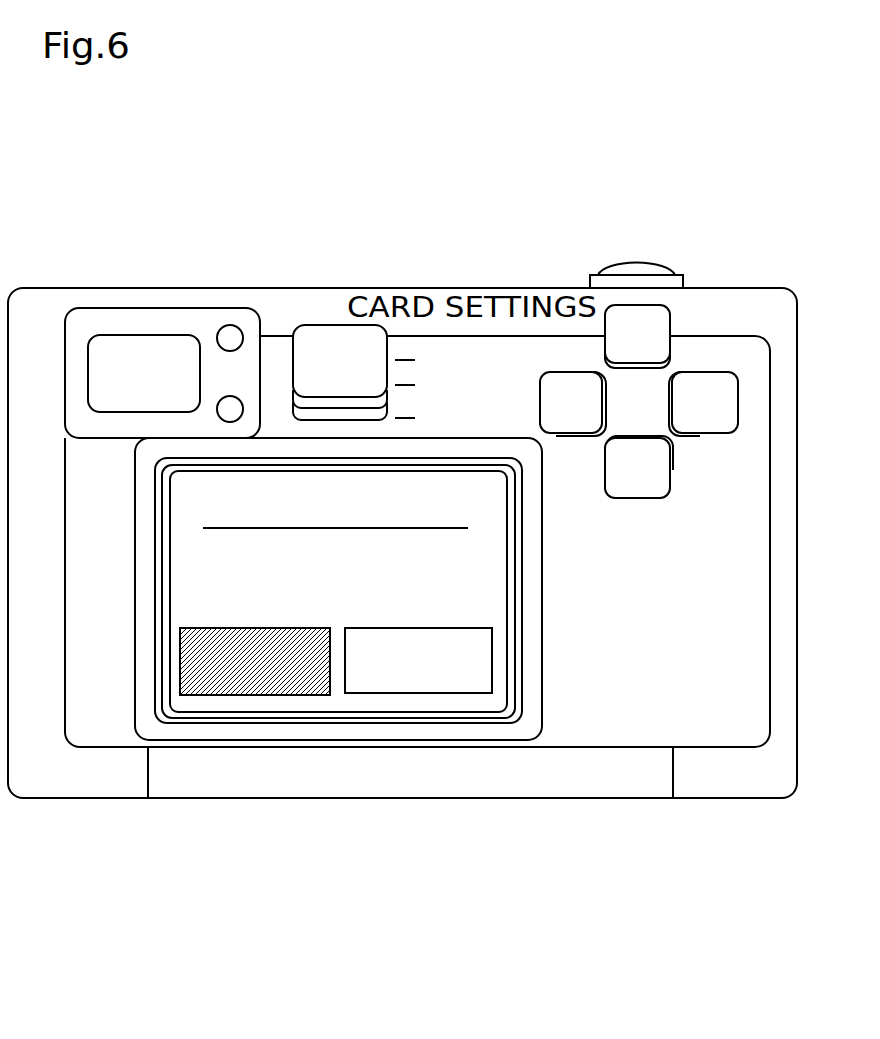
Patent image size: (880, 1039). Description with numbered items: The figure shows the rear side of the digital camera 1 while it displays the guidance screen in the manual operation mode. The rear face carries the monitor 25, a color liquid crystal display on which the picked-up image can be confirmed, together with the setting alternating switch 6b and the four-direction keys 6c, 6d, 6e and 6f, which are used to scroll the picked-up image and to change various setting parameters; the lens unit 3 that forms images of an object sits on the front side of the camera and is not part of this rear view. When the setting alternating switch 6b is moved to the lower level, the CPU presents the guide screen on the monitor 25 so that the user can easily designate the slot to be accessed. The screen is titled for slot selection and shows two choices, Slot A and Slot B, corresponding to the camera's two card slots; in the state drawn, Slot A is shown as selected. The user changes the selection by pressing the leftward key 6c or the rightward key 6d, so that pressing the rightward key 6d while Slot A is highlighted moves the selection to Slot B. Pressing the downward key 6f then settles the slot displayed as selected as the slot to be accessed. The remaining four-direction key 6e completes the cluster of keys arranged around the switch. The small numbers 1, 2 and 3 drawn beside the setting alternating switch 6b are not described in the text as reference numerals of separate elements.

The monitor 25 is at (343, 710).
The setting alternating switch 6b is at (323, 325).
The leftward key 6c is at (573, 433).
The rightward key 6d is at (710, 433).
The four-direction key 6e is at (672, 317).
The downward key 6f is at (643, 500).
The digital camera 1 is at (416, 361).
The card slot indicator 2 is at (416, 386).
The lens unit 3 is at (416, 419).